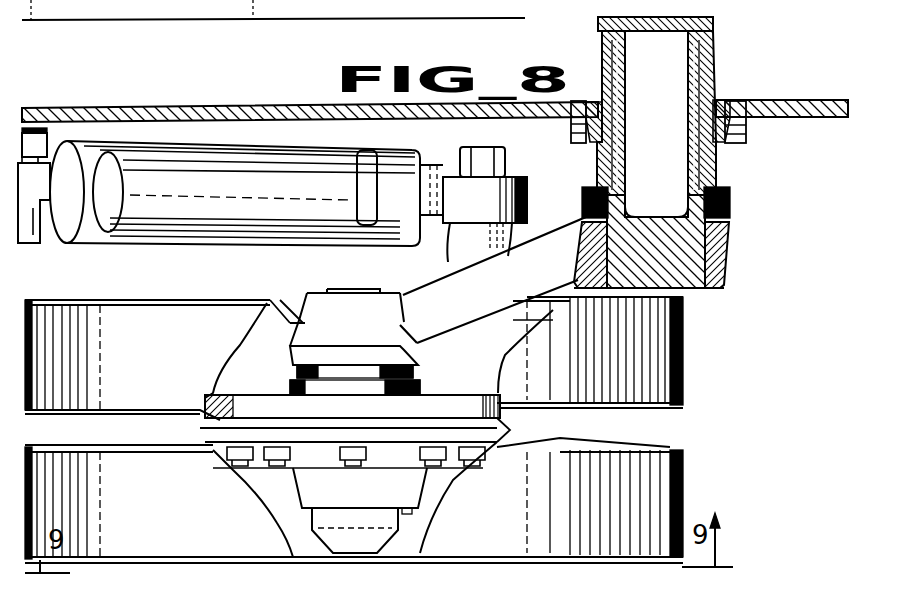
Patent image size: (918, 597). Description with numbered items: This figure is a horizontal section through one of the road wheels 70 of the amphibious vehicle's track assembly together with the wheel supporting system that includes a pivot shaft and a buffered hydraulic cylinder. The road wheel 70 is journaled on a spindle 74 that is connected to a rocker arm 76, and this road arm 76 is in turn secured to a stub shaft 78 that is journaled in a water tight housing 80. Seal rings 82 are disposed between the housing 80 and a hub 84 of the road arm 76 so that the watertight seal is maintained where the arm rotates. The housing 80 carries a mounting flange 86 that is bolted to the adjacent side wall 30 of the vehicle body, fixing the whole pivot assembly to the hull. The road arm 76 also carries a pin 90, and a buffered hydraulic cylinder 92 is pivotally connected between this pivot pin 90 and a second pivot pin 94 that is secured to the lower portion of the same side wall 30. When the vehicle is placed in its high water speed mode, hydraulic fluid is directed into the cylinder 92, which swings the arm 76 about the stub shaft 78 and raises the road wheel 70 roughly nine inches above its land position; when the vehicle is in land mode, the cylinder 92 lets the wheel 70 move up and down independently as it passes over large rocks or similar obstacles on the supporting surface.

The side wall 30 is at (143, 107).
The road wheel 70 is at (698, 414).
The spindle 74 is at (352, 291).
The rocker arm 76 is at (497, 297).
The stub shaft 78 is at (700, 288).
The water tight housing 80 is at (718, 162).
The seal rings 82 is at (730, 208).
The hub 84 is at (722, 248).
The mounting flange 86 is at (573, 128).
The pin 90 is at (477, 148).
The buffered hydraulic cylinder 92 is at (238, 143).
The second pivot pin 94 is at (37, 138).